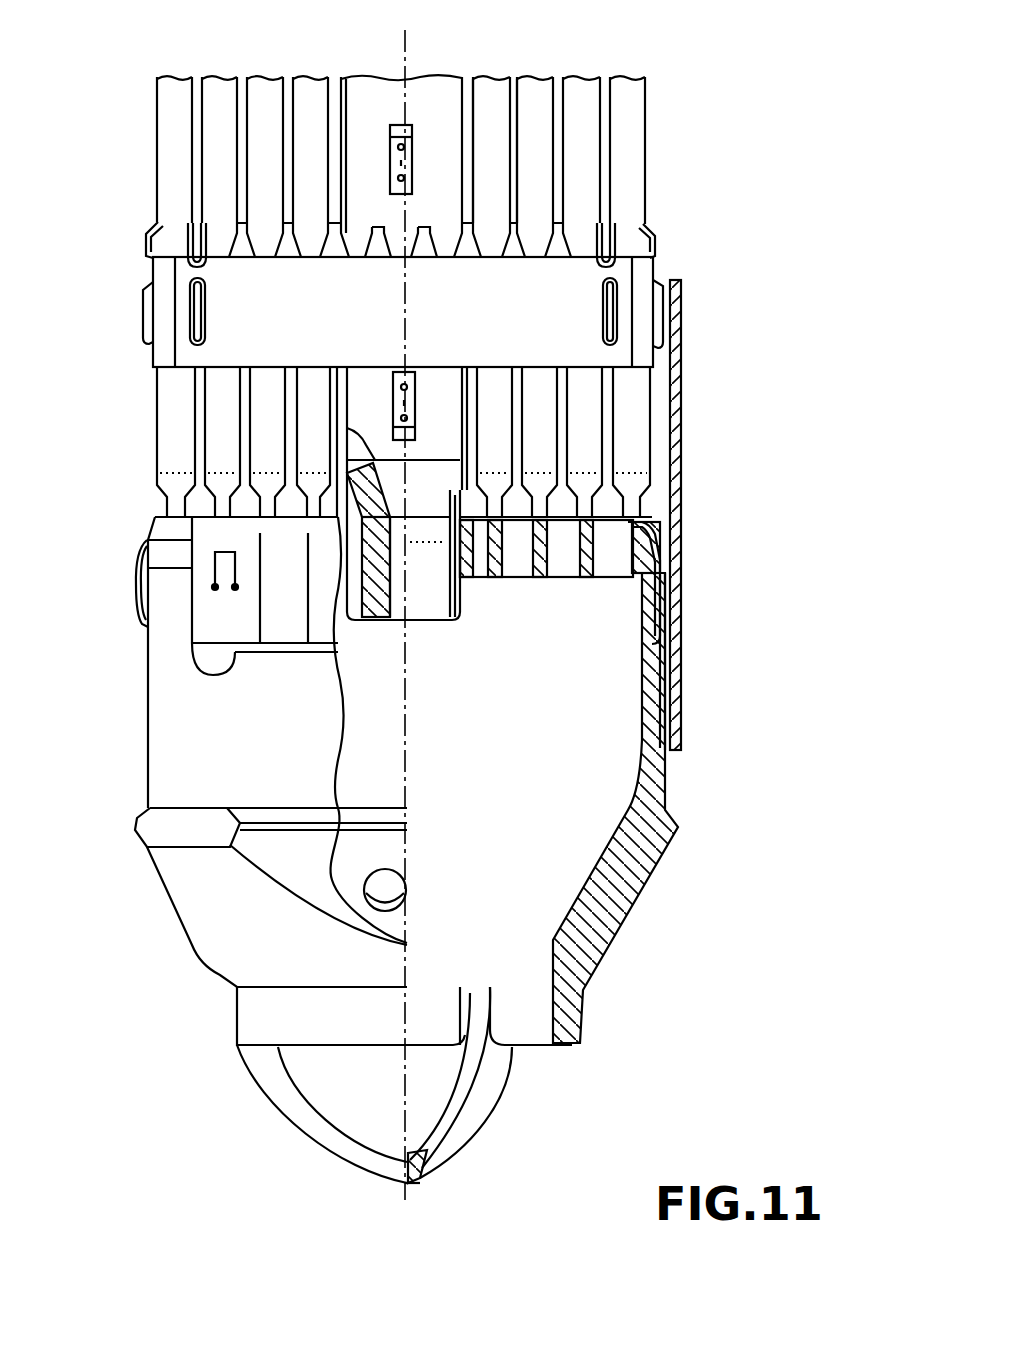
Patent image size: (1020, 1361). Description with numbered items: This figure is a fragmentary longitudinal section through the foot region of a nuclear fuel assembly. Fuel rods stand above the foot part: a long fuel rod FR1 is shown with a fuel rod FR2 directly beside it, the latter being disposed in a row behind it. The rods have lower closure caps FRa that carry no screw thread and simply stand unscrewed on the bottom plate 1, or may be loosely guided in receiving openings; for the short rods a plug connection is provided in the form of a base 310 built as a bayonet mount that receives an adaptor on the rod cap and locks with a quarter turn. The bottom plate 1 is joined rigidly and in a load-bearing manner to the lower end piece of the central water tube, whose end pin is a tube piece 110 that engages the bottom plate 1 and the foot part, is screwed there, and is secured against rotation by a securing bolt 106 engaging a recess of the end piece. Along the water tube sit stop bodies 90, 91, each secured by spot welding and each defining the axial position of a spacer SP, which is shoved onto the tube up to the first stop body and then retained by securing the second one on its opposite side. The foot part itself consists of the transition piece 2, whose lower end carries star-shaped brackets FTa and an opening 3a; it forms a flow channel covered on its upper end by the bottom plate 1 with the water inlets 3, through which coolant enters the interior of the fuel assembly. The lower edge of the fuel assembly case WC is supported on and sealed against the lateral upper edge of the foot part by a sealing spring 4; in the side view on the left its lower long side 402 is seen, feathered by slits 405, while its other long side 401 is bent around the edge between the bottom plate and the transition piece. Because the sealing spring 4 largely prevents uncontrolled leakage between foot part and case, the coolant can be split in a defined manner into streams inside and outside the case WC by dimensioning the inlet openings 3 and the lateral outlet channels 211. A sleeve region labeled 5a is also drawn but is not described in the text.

The stop body 90 is at (398, 126).
The long fuel rod FR1 is at (488, 97).
The fuel rod FR2 is at (535, 92).
The spacer SP is at (152, 280).
The fuel assembly case WC is at (684, 378).
The stop body 91 is at (416, 397).
The securing bolt 106 is at (470, 507).
The base 310 is at (557, 503).
The long side of the sealing spring 401 is at (650, 526).
The bottom plate 1 is at (660, 550).
The water inlet 3 is at (517, 578).
The central sleeve 5a is at (430, 622).
The tube piece 110 is at (377, 623).
The lower closure cap FRa is at (168, 515).
The sealing spring 4 is at (137, 598).
The lower long side of the sealing spring 402 is at (197, 630).
The slit 405 is at (260, 613).
The lateral outlet channel 211 is at (395, 880).
The transition piece 2 is at (665, 827).
The opening 3a is at (527, 1048).
The star-shaped bracket FTa is at (466, 1123).